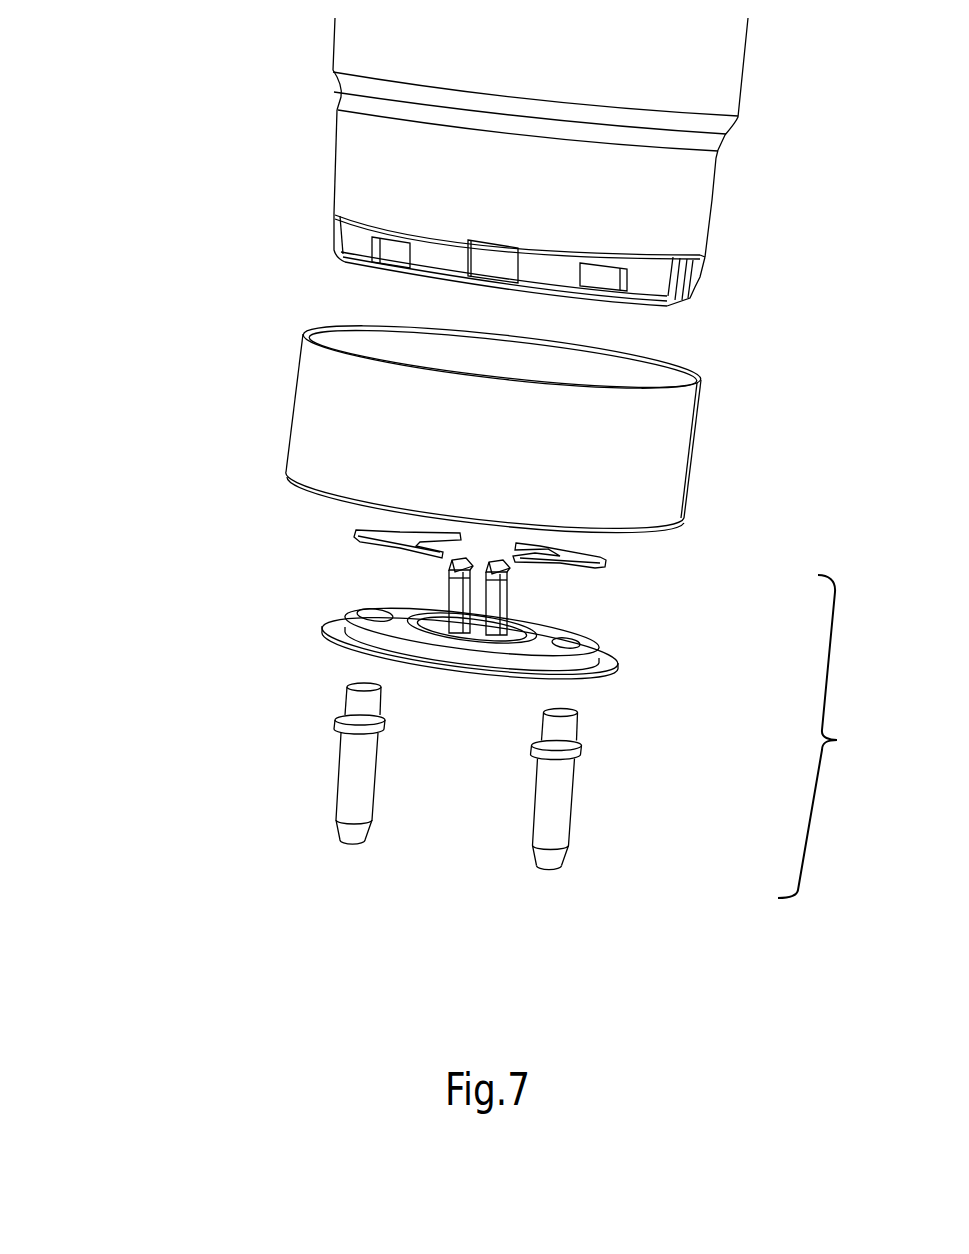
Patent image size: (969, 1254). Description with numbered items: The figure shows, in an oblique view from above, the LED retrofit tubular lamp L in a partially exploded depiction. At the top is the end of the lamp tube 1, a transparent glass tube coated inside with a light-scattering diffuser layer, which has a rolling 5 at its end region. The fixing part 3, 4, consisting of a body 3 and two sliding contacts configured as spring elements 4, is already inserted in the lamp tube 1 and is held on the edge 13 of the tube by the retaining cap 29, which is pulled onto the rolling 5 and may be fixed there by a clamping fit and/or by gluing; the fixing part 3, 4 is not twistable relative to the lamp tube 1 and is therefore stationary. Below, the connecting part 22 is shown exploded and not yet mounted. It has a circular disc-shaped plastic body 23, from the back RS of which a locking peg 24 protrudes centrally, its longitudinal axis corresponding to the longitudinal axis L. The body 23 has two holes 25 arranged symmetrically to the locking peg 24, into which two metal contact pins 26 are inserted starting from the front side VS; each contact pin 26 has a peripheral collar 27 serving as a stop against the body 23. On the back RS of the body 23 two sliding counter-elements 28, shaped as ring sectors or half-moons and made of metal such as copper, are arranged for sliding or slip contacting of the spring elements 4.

The lamp tube 1 is at (742, 77).
The body 3 is at (581, 259).
The spring elements 4 is at (698, 283).
The rolling 5 is at (712, 203).
The edge 13 is at (353, 215).
The connecting part 22 is at (828, 736).
The body 23 is at (438, 674).
The locking peg 24 is at (445, 602).
The holes 25 is at (365, 610).
The contact pins 26 is at (330, 805).
The collars 27 is at (335, 718).
The sliding counter-elements 28 is at (342, 532).
The retaining cap 29 is at (692, 490).
The LED retrofit tubular lamp L is at (142, 157).
The back RS is at (603, 662).
The front side VS is at (502, 683).